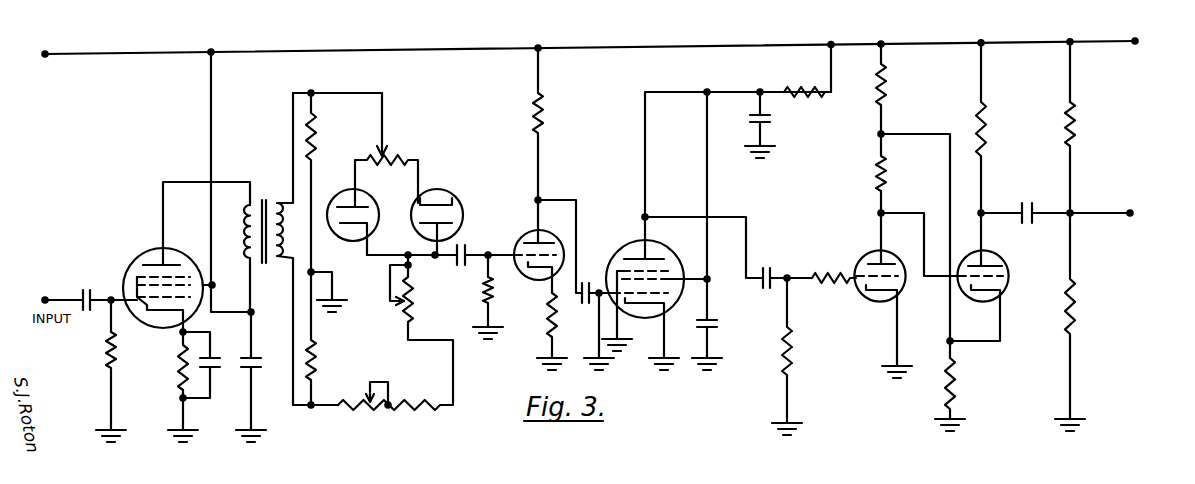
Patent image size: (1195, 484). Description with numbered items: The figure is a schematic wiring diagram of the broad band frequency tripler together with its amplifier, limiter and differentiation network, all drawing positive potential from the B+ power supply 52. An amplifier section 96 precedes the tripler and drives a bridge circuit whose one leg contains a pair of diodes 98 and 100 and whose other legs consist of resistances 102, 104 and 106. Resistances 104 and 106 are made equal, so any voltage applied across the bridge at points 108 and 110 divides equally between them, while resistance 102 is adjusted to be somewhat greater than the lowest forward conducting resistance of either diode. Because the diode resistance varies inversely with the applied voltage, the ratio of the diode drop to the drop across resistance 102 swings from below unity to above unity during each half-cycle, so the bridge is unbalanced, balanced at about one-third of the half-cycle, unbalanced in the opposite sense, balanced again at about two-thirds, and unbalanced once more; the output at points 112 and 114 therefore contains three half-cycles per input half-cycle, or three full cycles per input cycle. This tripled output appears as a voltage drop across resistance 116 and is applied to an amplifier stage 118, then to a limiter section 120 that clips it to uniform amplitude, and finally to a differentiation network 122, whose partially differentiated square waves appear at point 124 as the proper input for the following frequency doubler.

The B+ power supply 52 is at (412, 49).
The amplifier section 96 is at (186, 142).
The diode 98 is at (358, 190).
The diode 100 is at (462, 205).
The resistance 102 is at (405, 395).
The resistance 104 is at (315, 373).
The resistance 106 is at (315, 140).
The bridge input point 108 is at (312, 408).
The bridge input point 110 is at (312, 92).
The bridge output point 112 is at (437, 264).
The bridge output point 114 is at (313, 268).
The resistance 116 is at (493, 280).
The amplifier stage 118 is at (606, 193).
The limiter section 120 is at (929, 186).
The differentiation network 122 is at (1057, 252).
The output point 124 is at (1142, 196).